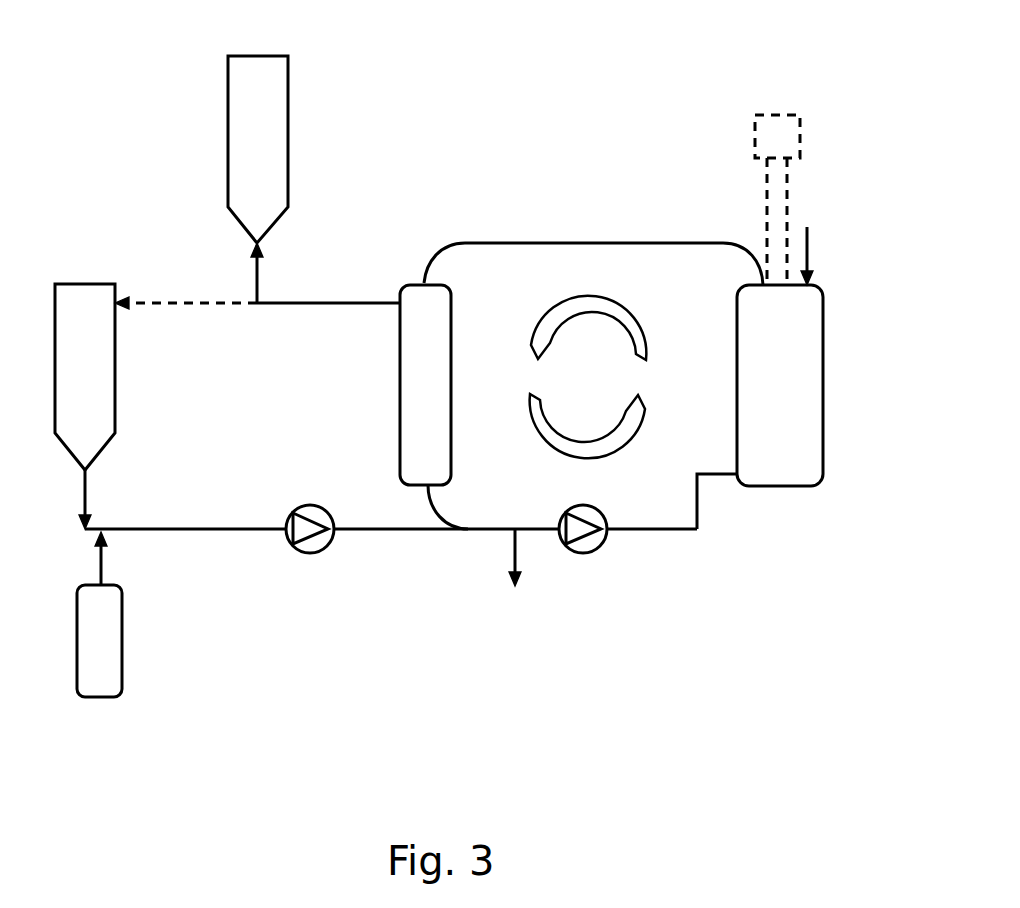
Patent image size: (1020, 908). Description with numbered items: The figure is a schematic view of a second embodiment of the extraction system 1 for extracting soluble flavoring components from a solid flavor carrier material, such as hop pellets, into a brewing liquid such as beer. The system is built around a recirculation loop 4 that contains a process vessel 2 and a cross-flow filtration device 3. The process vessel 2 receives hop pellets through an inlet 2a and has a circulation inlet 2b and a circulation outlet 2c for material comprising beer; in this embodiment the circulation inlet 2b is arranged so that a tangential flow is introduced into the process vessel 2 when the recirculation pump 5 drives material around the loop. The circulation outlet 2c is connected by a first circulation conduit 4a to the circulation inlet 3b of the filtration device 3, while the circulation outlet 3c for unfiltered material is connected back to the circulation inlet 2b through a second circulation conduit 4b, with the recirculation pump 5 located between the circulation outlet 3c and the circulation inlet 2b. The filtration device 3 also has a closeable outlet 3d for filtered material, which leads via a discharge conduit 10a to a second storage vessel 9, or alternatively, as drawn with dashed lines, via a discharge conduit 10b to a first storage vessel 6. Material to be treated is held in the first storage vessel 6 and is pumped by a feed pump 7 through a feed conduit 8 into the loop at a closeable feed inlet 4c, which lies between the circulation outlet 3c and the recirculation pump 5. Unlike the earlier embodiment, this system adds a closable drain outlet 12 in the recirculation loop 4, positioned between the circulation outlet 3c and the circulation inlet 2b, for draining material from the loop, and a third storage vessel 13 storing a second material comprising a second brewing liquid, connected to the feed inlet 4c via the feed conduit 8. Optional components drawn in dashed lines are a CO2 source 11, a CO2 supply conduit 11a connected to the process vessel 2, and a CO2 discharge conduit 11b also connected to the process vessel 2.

The extraction system 1 is at (683, 94).
The process vessel 2 is at (800, 412).
The inlet for hop pellets 2a is at (814, 277).
The circulation inlet 2b is at (721, 492).
The circulation outlet 2c is at (749, 273).
The filtration device 3 is at (442, 346).
The circulation inlet 3b is at (416, 272).
The circulation outlet 3c is at (446, 492).
The closeable outlet 3d is at (392, 318).
The recirculation loop 4 is at (528, 369).
The first circulation conduit 4a is at (593, 243).
The second circulation conduit 4b is at (677, 535).
The closeable feed inlet 4c is at (457, 543).
The recirculation pump 5 is at (588, 545).
The first storage vessel 6 is at (95, 418).
The feed pump 7 is at (312, 544).
The feed conduit 8 is at (170, 532).
The second storage vessel 9 is at (275, 125).
The discharge conduit 10a is at (259, 284).
The discharge conduit 10b is at (171, 304).
The CO2 source 11 is at (800, 138).
The CO2 supply conduit 11a is at (787, 208).
The CO2 discharge conduit 11b is at (766, 206).
The closable drain outlet 12 is at (503, 545).
The third storage vessel 13 is at (110, 672).